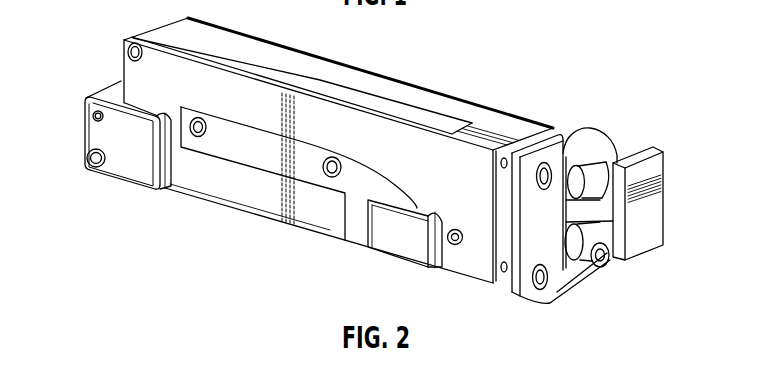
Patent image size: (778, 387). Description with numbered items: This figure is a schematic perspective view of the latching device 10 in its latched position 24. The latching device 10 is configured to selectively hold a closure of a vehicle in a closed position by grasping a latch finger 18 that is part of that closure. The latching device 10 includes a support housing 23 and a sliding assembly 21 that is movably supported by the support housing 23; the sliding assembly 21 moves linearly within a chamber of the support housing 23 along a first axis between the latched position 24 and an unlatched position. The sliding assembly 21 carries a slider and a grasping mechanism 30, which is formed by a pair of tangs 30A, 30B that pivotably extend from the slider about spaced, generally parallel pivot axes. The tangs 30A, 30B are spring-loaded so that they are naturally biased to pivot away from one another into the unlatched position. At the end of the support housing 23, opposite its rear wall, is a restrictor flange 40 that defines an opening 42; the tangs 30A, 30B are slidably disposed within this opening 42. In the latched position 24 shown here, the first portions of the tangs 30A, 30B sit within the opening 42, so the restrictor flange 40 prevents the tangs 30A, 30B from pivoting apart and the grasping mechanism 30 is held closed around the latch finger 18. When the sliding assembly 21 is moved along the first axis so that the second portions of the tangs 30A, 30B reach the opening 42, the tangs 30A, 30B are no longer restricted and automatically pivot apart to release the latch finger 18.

The latching device 10 is at (117, 17).
The support housing 23 is at (247, 198).
The restrictor flange 40 is at (565, 134).
The sliding assembly 21 is at (547, 303).
The grasping mechanism 30 is at (583, 121).
The tang 30A is at (574, 172).
The tang 30B is at (608, 266).
The latched position 24 is at (612, 131).
The opening 42 is at (598, 158).
The latch finger 18 is at (597, 216).